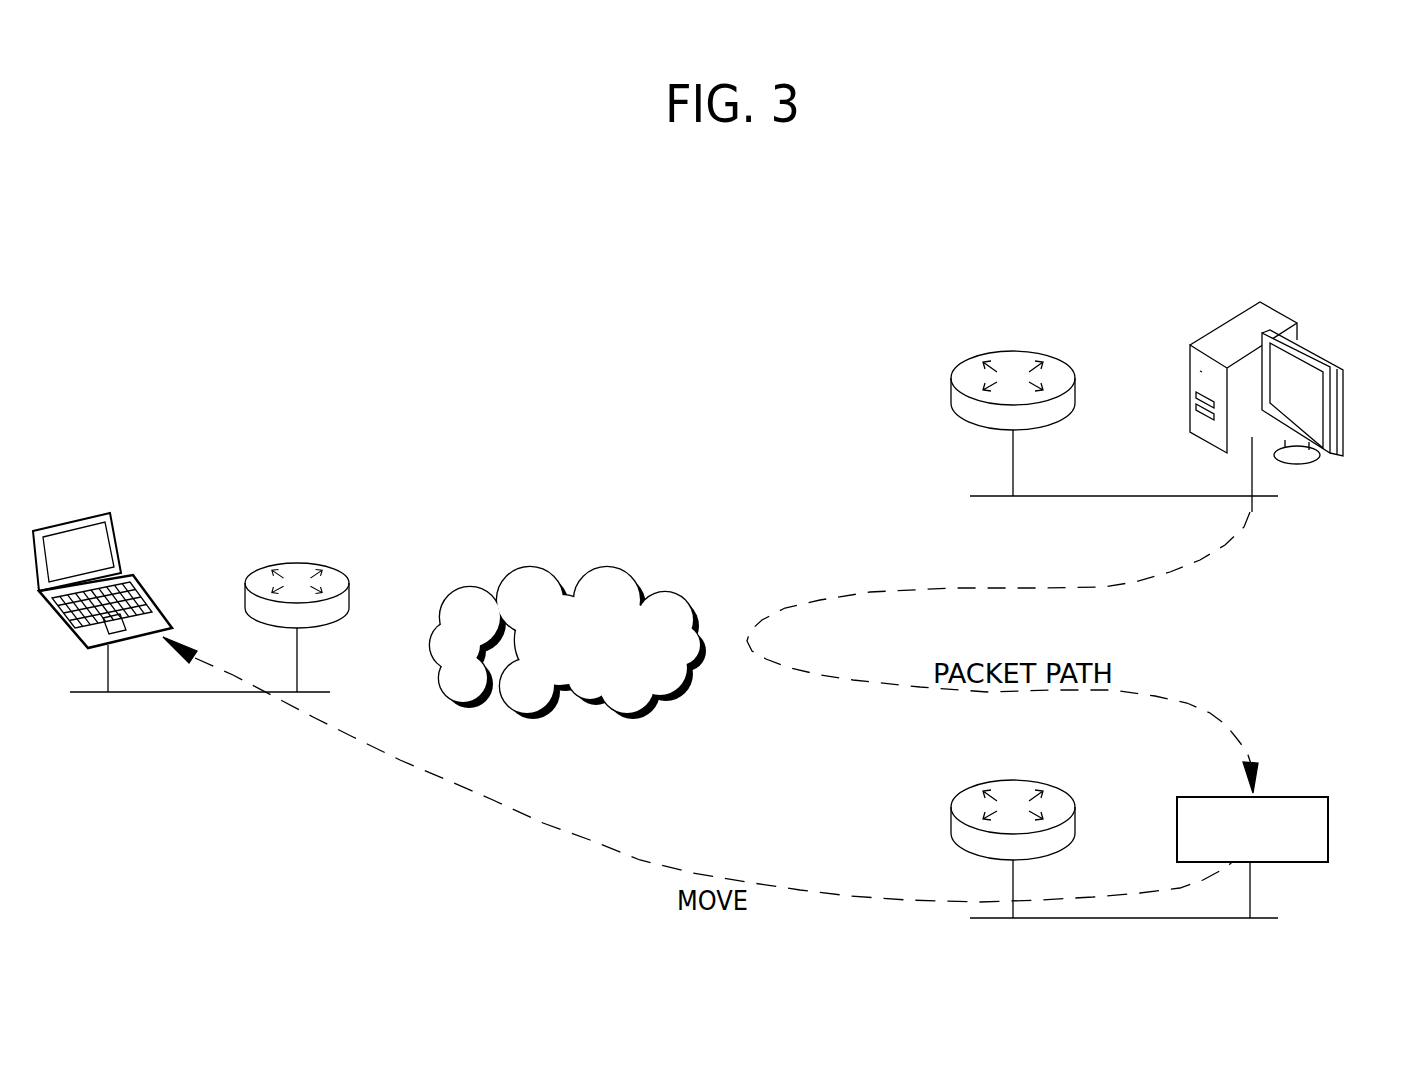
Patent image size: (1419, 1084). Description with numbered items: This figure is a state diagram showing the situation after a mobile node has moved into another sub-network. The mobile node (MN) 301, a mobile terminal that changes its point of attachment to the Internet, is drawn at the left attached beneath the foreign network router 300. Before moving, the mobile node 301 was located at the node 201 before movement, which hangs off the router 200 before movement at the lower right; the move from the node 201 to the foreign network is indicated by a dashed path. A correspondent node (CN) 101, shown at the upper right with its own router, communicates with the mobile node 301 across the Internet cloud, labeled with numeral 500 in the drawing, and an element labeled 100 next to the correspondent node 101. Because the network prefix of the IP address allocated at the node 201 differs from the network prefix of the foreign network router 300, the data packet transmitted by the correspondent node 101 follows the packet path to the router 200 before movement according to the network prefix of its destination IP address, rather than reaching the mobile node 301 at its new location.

The home agent router 100 is at (950, 390).
The correspondent node 101 is at (1217, 337).
The router before movement 200 is at (950, 817).
The node before movement 201 is at (1300, 797).
The foreign network router 300 is at (297, 563).
The mobile node 301 is at (73, 520).
The Internet 500 is at (580, 580).